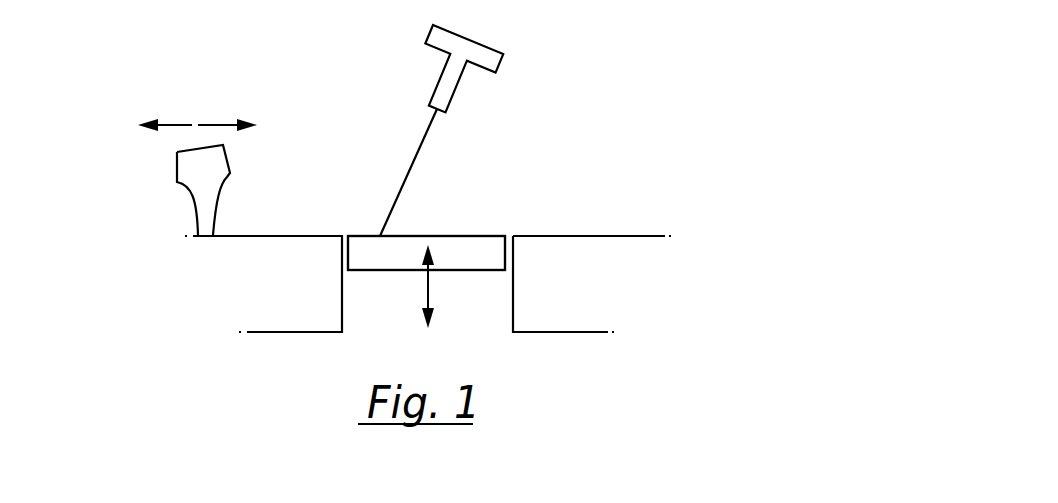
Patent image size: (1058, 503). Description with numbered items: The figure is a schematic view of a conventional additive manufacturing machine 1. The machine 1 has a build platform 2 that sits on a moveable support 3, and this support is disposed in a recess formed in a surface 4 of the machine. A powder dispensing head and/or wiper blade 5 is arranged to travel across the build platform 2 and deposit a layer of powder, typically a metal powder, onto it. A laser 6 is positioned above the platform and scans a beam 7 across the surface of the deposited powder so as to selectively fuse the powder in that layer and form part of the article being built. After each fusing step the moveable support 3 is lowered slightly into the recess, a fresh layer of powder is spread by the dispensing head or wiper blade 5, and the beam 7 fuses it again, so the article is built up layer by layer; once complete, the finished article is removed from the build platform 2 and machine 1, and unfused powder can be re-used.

The AM machine 1 is at (632, 103).
The build platform 2 is at (480, 220).
The moveable support 3 is at (487, 258).
The surface 4 is at (632, 236).
The powder dispensing head and/or wiper blade 5 is at (181, 165).
The laser 6 is at (437, 38).
The beam 7 is at (412, 163).